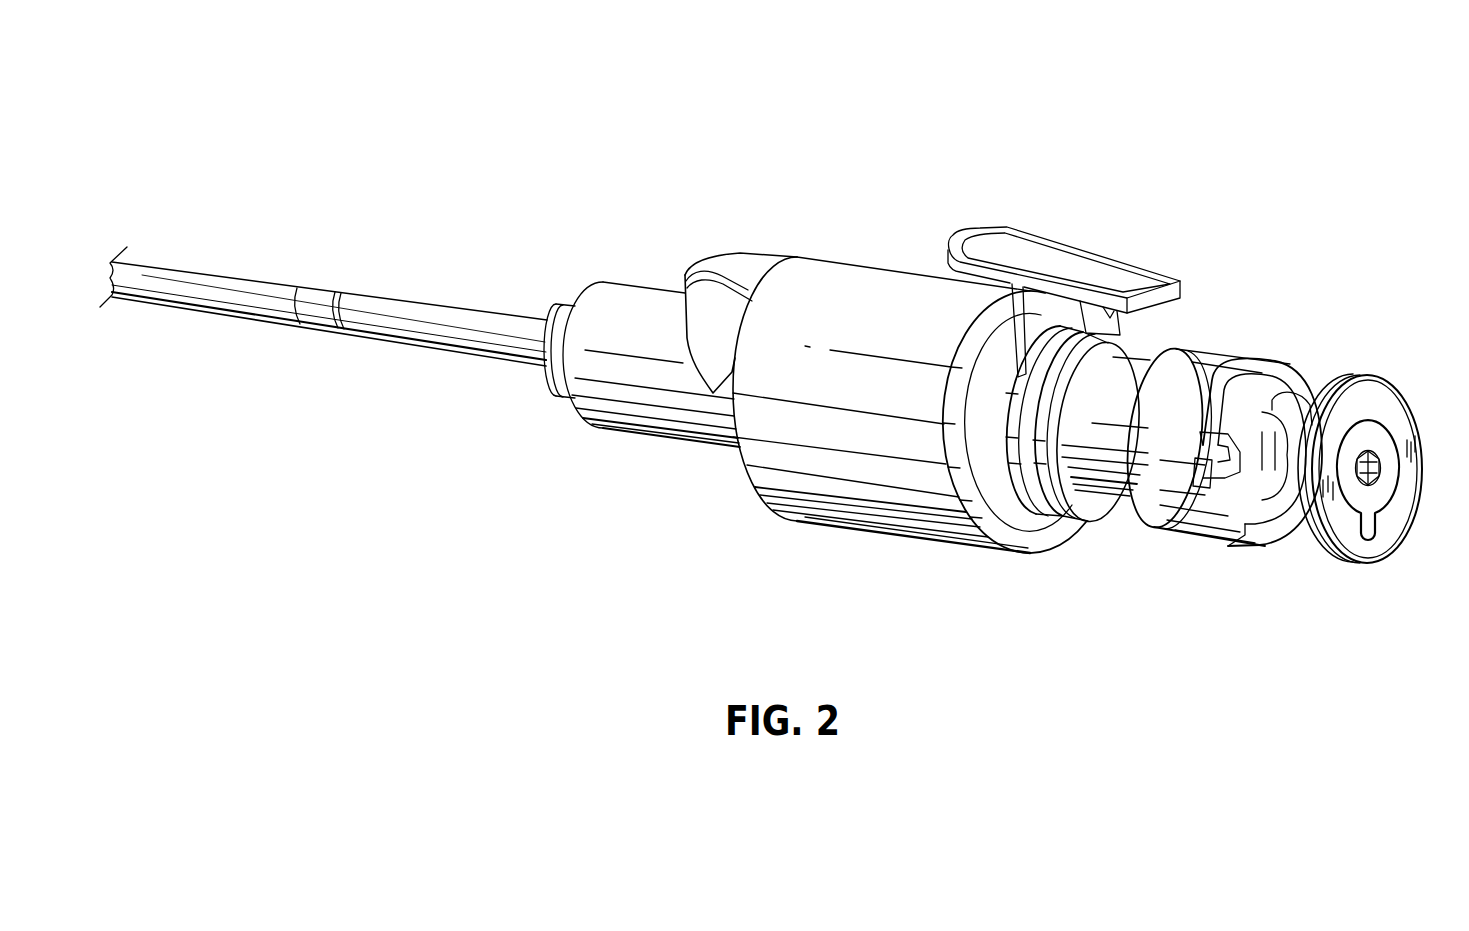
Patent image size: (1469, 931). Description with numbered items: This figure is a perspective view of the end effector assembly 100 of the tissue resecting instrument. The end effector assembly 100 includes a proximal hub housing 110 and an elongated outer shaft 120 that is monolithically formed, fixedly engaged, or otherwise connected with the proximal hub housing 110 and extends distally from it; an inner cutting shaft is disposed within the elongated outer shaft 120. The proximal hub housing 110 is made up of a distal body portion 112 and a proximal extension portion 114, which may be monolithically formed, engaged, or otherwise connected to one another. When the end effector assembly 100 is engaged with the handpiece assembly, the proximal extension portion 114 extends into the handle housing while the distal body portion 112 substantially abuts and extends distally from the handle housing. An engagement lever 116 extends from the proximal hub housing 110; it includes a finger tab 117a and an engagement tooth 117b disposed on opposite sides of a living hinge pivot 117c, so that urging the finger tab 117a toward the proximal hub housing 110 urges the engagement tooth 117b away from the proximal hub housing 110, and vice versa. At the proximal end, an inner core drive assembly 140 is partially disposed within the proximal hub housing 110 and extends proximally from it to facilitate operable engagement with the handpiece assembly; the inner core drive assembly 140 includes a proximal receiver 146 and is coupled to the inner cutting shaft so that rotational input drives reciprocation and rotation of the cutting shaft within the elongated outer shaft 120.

The end effector assembly 100 is at (827, 94).
The proximal hub housing 110 is at (907, 241).
The distal body portion 112 is at (843, 503).
The proximal extension portion 114 is at (1177, 485).
The engagement lever 116 is at (1103, 242).
The finger tab 117a is at (975, 243).
The engagement tooth 117b is at (1120, 318).
The living hinge pivot 117c is at (1018, 300).
The elongated outer shaft 120 is at (415, 290).
The inner core drive assembly 140 is at (1408, 455).
The proximal receiver 146 is at (1380, 497).